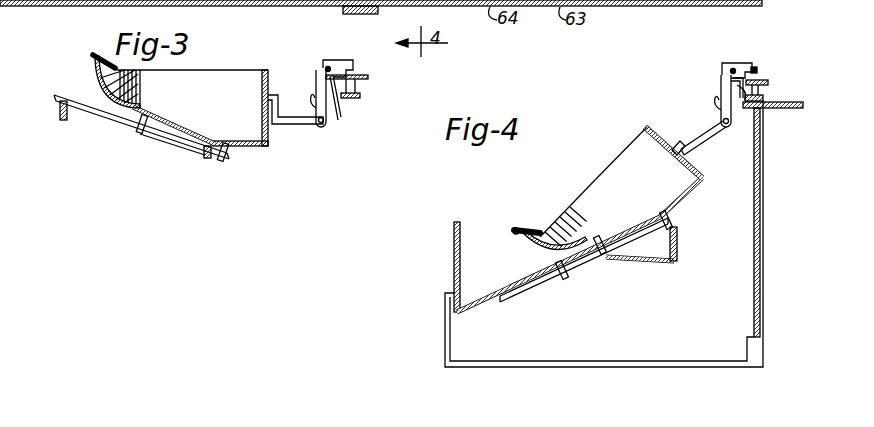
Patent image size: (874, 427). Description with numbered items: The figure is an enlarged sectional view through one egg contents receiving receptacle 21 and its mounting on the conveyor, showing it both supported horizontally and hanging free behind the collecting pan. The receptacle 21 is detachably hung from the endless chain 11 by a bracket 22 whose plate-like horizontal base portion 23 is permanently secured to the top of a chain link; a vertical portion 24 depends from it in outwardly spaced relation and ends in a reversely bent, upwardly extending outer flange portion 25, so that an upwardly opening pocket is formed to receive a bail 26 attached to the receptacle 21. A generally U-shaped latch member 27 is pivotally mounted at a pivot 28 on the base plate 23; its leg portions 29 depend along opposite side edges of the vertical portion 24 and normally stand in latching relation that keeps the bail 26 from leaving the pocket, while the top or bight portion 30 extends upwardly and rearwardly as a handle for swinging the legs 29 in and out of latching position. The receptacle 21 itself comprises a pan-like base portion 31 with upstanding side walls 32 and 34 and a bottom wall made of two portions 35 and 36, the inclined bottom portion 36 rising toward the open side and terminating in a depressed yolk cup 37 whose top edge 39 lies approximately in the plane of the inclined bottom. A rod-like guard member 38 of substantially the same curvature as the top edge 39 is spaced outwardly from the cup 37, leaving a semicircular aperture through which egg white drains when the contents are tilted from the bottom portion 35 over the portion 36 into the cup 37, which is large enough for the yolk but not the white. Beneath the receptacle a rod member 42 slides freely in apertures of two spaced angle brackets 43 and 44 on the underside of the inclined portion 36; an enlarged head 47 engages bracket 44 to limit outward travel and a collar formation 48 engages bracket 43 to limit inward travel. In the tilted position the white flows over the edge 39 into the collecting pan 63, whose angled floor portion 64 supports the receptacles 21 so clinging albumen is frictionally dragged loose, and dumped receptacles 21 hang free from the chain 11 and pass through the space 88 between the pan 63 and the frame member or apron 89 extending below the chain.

In FIG. 3, the endless chain 11 is at (362, 88).
In FIG. 4, the endless chain 11 is at (764, 92).
In FIG. 3, the egg contents receiving receptacle 21 is at (222, 78).
In FIG. 4, the egg contents receiving receptacle 21 is at (632, 134).
In FIG. 3, the bracket 22 is at (322, 70).
In FIG. 4, the bracket 22 is at (722, 84).
In FIG. 3, the horizontal base portion 23 is at (360, 77).
In FIG. 4, the horizontal base portion 23 is at (769, 83).
In FIG. 3, the vertical portion 24 is at (334, 105).
In FIG. 4, the vertical portion 24 is at (736, 93).
In FIG. 4, the outer flange portion 25 is at (717, 104).
In FIG. 3, the bail 26 is at (298, 123).
In FIG. 4, the bail 26 is at (700, 136).
In FIG. 3, the latch member 27 is at (343, 61).
In FIG. 4, the latch member 27 is at (747, 63).
In FIG. 4, the pivot 28 is at (731, 68).
In FIG. 4, the leg portions 29 is at (745, 100).
In FIG. 4, the bight portion 30 is at (758, 70).
In FIG. 3, the pan-like base portion 31 is at (190, 74).
In FIG. 4, the pan-like base portion 31 is at (583, 182).
In FIG. 4, the side wall 32 is at (612, 156).
In FIG. 3, the side wall 34 is at (269, 141).
In FIG. 4, the side wall 34 is at (655, 130).
In FIG. 3, the bottom wall portion 35 is at (255, 141).
In FIG. 4, the bottom wall portion 35 is at (683, 194).
In FIG. 3, the inclined bottom portion 36 is at (152, 110).
In FIG. 4, the inclined bottom portion 36 is at (637, 224).
In FIG. 3, the yolk cup 37 is at (95, 78).
In FIG. 4, the yolk cup 37 is at (548, 248).
In FIG. 4, the guard member 38 is at (521, 228).
In FIG. 4, the top edge 39 is at (524, 237).
In FIG. 3, the rod member 42 is at (70, 112).
In FIG. 4, the rod member 42 is at (588, 262).
In FIG. 3, the angle bracket 43 is at (140, 134).
In FIG. 4, the angle bracket 43 is at (608, 250).
In FIG. 3, the angle bracket 44 is at (210, 158).
In FIG. 4, the angle bracket 44 is at (678, 243).
In FIG. 3, the enlarged head 47 is at (230, 158).
In FIG. 4, the enlarged head 47 is at (674, 224).
In FIG. 3, the collar formation 48 is at (137, 123).
In FIG. 4, the collar formation 48 is at (565, 277).
In FIG. 4, the collecting pan 63 is at (453, 266).
In FIG. 4, the floor portion 64 is at (488, 309).
In FIG. 4, the space 88 is at (761, 200).
In FIG. 4, the apron 89 is at (763, 222).